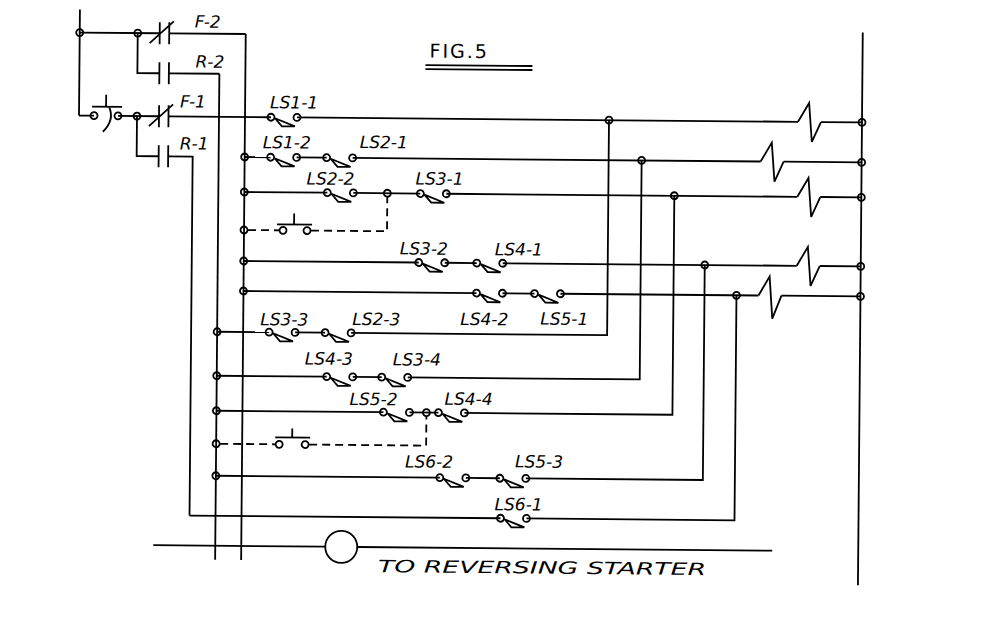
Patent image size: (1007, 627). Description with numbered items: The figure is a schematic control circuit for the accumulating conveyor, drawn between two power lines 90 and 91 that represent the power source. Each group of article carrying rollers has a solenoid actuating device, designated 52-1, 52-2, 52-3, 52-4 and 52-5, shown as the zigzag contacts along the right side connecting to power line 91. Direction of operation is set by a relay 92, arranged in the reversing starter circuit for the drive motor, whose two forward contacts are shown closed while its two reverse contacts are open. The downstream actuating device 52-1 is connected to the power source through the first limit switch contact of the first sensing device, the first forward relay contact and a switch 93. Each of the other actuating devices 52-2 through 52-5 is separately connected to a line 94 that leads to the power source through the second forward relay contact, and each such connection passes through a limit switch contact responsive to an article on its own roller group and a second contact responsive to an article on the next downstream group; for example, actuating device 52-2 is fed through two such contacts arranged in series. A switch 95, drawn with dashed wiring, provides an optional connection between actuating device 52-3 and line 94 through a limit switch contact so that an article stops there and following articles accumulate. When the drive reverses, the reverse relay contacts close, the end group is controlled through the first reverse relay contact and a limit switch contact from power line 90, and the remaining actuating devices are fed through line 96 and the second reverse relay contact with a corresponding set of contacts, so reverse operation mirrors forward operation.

The power line 90 is at (80, 58).
The power line 91 is at (862, 66).
The relay 92 is at (341, 560).
The switch 93 is at (105, 128).
The line 94 is at (250, 85).
The switch 95 is at (293, 221).
The line 96 is at (219, 277).
The actuating device 52-1 is at (799, 114).
The actuating device 52-2 is at (764, 154).
The actuating device 52-3 is at (811, 212).
The actuating device 52-4 is at (800, 259).
The actuating device 52-5 is at (773, 306).